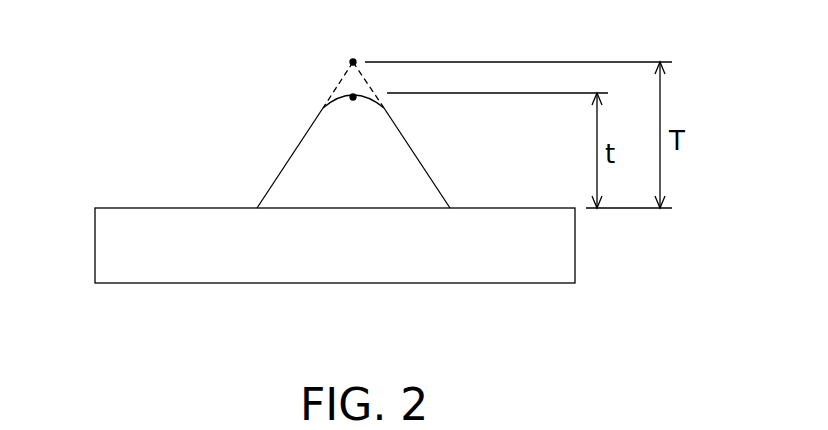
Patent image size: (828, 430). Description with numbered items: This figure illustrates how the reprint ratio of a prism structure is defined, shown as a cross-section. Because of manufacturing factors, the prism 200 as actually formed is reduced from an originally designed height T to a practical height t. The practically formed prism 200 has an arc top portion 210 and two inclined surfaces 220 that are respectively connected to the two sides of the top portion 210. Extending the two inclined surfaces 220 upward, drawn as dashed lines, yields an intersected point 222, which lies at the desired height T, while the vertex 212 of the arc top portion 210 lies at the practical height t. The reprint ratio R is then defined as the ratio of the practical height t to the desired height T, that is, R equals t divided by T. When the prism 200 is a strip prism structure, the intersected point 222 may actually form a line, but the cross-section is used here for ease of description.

The prism 200 is at (414, 189).
The arc top portion 210 is at (338, 98).
The vertex 212 is at (357, 95).
The inclined surfaces 220 is at (284, 166).
The intersected point 222 is at (355, 60).